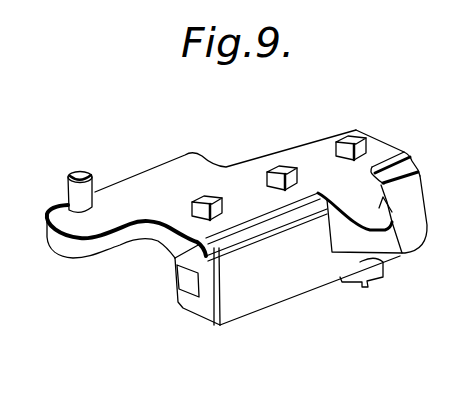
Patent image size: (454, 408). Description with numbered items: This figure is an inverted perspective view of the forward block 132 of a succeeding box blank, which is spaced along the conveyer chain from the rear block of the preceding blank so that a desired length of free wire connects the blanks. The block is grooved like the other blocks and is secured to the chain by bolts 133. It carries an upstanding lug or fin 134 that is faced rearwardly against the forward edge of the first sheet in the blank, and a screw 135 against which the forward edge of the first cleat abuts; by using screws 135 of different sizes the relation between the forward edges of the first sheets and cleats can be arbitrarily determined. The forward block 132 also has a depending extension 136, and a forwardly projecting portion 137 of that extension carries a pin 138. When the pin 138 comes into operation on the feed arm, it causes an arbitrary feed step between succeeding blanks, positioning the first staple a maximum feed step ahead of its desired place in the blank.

The forward block 132 is at (258, 288).
The bolts 133 is at (213, 200).
The upstanding lug or fin 134 is at (393, 220).
The screw 135 is at (375, 283).
The depending extension 136 is at (187, 163).
The forwardly projecting portion 137 is at (93, 233).
The pin 138 is at (77, 192).